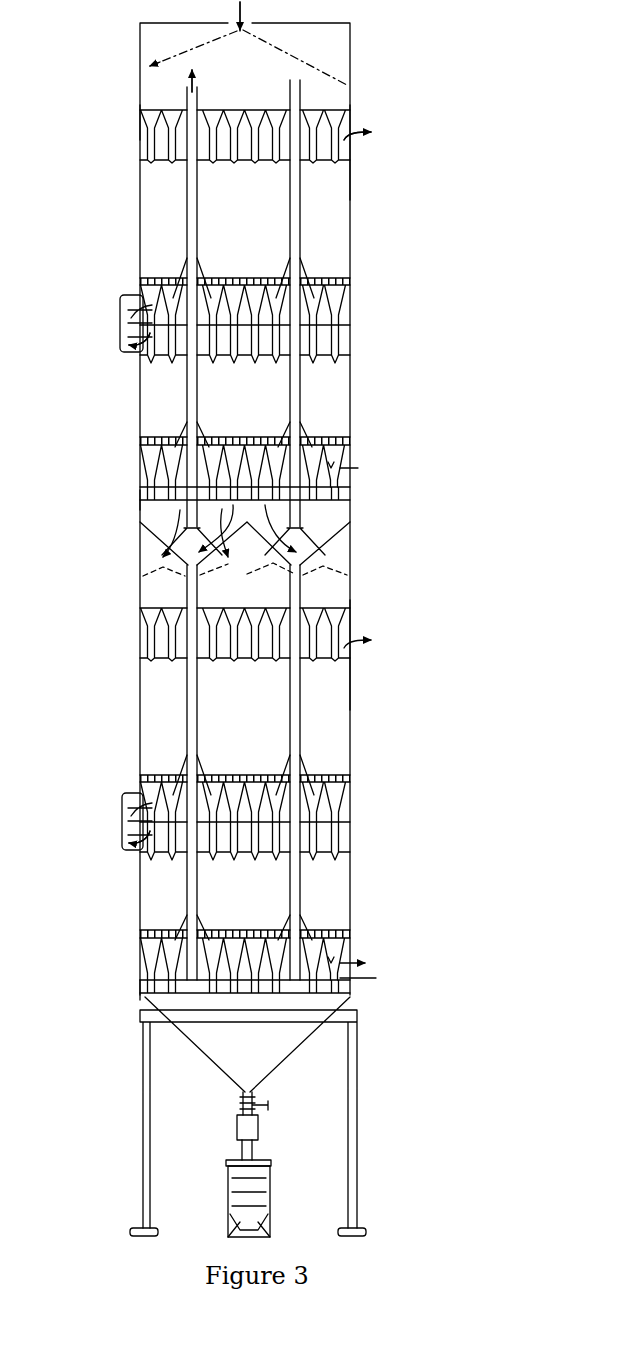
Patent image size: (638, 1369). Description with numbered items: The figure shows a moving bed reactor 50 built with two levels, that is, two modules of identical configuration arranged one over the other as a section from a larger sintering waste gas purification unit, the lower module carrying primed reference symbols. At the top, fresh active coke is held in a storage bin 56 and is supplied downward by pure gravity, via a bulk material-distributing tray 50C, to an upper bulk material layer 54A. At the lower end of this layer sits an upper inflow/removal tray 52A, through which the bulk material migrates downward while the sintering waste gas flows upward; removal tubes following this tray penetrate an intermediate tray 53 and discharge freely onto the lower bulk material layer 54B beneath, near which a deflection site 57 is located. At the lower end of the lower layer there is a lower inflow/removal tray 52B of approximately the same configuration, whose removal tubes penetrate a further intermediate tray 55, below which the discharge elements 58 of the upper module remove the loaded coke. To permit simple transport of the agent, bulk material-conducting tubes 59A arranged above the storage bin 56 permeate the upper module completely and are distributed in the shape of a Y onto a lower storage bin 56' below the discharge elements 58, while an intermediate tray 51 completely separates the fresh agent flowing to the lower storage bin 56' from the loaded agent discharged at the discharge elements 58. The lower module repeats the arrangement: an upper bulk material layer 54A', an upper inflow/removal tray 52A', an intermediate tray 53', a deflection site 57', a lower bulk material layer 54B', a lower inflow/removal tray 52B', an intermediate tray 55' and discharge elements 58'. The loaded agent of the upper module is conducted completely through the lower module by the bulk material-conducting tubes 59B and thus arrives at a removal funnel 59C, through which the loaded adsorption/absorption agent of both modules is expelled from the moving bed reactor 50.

The moving bed reactor 50 is at (353, 77).
The bulk material-distributing tray 50C is at (137, 123).
The storage bin 56 is at (248, 57).
The bulk material-conducting tube 59A is at (341, 191).
The upper bulk material layer 54A is at (245, 220).
The upper inflow/removal tray 52A is at (282, 297).
The intermediate tray 53 is at (276, 326).
The deflection site 57 is at (109, 333).
The lower bulk material layer 54B is at (245, 400).
The lower inflow/removal tray 52B is at (281, 444).
The discharge elements 58 is at (98, 503).
The intermediate tray 55 is at (275, 502).
The intermediate tray 51 is at (341, 548).
The lower storage bin 56' is at (245, 587).
The bulk material-conducting tube 59B is at (341, 698).
The upper bulk material layer 54A' is at (245, 717).
The upper inflow/removal tray 52A' is at (283, 798).
The intermediate tray 53' is at (275, 833).
The deflection site 57' is at (113, 826).
The lower bulk material layer 54B' is at (245, 894).
The lower inflow/removal tray 52B' is at (286, 938).
The discharge elements 58' is at (102, 992).
The intermediate tray 55' is at (280, 1014).
The removal funnel 59C is at (282, 1068).